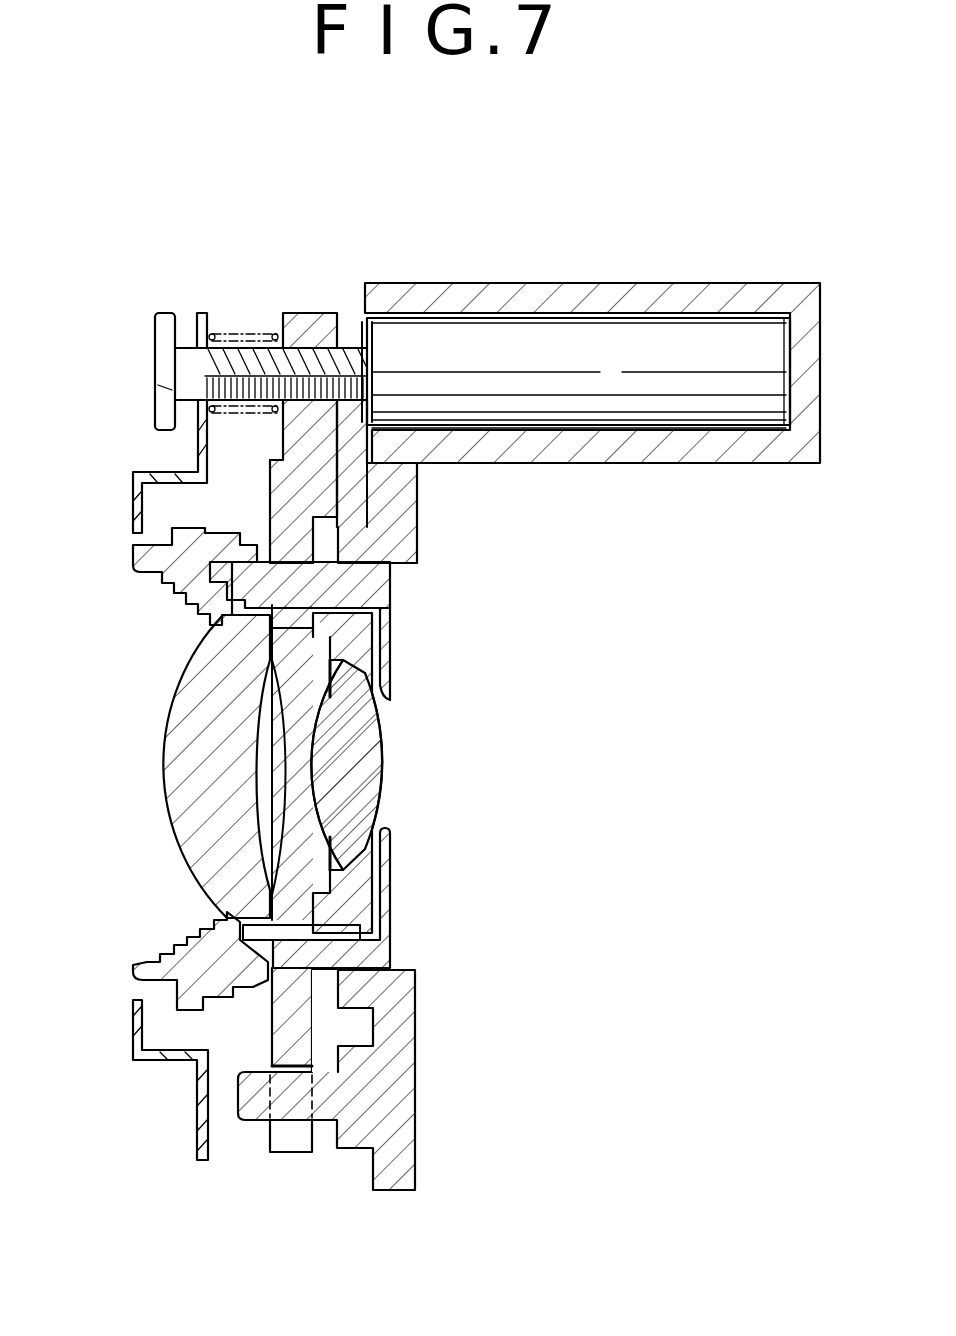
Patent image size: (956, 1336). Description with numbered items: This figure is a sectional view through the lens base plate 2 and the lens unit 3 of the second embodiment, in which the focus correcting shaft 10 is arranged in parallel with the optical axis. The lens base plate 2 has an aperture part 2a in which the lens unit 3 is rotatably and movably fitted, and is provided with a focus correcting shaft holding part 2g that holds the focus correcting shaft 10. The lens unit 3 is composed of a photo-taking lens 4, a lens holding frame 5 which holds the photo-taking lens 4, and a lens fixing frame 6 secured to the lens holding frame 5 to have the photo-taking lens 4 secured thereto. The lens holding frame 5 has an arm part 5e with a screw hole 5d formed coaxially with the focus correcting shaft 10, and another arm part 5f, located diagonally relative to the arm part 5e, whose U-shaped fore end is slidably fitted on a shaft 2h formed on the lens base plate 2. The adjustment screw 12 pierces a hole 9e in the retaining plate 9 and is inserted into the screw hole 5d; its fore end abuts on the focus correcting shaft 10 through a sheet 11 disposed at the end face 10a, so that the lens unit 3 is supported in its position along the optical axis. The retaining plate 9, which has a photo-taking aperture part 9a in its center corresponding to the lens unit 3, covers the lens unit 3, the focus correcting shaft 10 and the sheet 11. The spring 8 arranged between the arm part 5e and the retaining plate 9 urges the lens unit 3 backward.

The lens base plate 2 is at (405, 1072).
The aperture part 2a is at (593, 698).
The focus correcting shaft holding part 2g is at (725, 295).
The shaft 2h is at (325, 1112).
The lens unit 3 is at (488, 816).
The photo-taking lens 4 is at (243, 822).
The lens holding frame 5 is at (363, 922).
The screw hole 5d is at (306, 345).
The arm part 5e is at (280, 447).
The arm part 5f is at (287, 1141).
The lens fixing frame 6 is at (163, 566).
The spring 8 is at (238, 330).
The retaining plate 9 is at (130, 503).
The photo-taking aperture part 9a is at (137, 992).
The hole 9e is at (183, 346).
The focus correcting shaft 10 is at (655, 390).
The end face 10a is at (357, 407).
The sheet 11 is at (380, 335).
The adjustment screw 12 is at (157, 385).